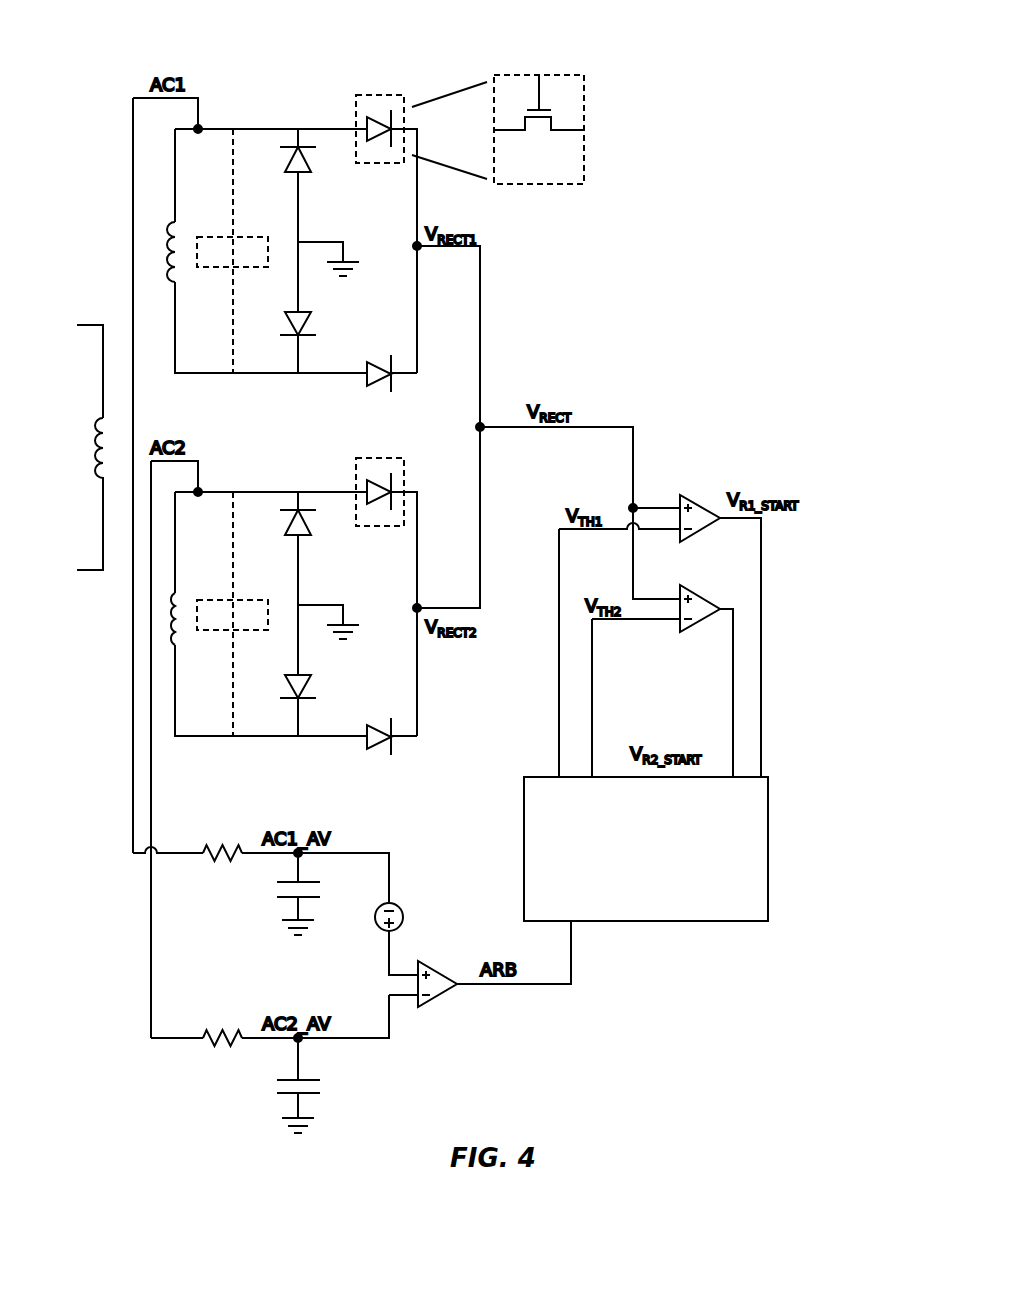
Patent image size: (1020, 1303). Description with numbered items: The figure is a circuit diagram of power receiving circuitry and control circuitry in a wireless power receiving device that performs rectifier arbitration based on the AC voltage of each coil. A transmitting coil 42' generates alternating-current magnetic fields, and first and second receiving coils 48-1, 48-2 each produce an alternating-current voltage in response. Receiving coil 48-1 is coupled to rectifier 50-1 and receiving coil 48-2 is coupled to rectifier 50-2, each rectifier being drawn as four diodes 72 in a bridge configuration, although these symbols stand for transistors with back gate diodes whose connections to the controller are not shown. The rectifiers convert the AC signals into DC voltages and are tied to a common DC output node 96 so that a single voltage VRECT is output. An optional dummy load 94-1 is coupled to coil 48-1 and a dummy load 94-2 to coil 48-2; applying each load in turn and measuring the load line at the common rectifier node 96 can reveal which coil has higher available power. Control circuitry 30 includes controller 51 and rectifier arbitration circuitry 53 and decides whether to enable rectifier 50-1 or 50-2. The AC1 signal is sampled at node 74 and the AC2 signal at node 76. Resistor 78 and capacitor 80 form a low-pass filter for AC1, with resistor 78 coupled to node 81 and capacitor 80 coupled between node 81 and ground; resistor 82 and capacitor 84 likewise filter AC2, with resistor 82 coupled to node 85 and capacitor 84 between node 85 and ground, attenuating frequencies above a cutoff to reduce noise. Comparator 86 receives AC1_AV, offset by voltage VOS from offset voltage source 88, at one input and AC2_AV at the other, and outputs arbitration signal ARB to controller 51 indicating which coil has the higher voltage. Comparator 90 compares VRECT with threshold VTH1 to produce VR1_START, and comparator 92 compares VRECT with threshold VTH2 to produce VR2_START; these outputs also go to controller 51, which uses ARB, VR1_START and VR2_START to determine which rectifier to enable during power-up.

The control circuitry 30 is at (830, 287).
The transmitting coil 42' is at (62, 447).
The first receiving coil 48-1 is at (165, 240).
The second receiving coil 48-2 is at (164, 630).
The first rectifier 50-1 is at (413, 92).
The second rectifier 50-2 is at (406, 476).
The controller 51 is at (768, 848).
The rectifier arbitration circuitry 53 is at (545, 702).
The diode 72 is at (312, 158).
The node 74 is at (198, 135).
The node 76 is at (198, 500).
The resistor 78 is at (220, 870).
The capacitor 80 is at (272, 893).
The node 81 is at (307, 860).
The resistor 82 is at (220, 1055).
The capacitor 84 is at (272, 1085).
The node 85 is at (307, 1045).
The comparator 86 is at (447, 1006).
The offset voltage source 88 is at (412, 897).
The comparator 90 is at (700, 497).
The comparator 92 is at (702, 634).
The load 94-1 is at (237, 226).
The load 94-2 is at (237, 589).
The common DC output node 96 is at (489, 434).